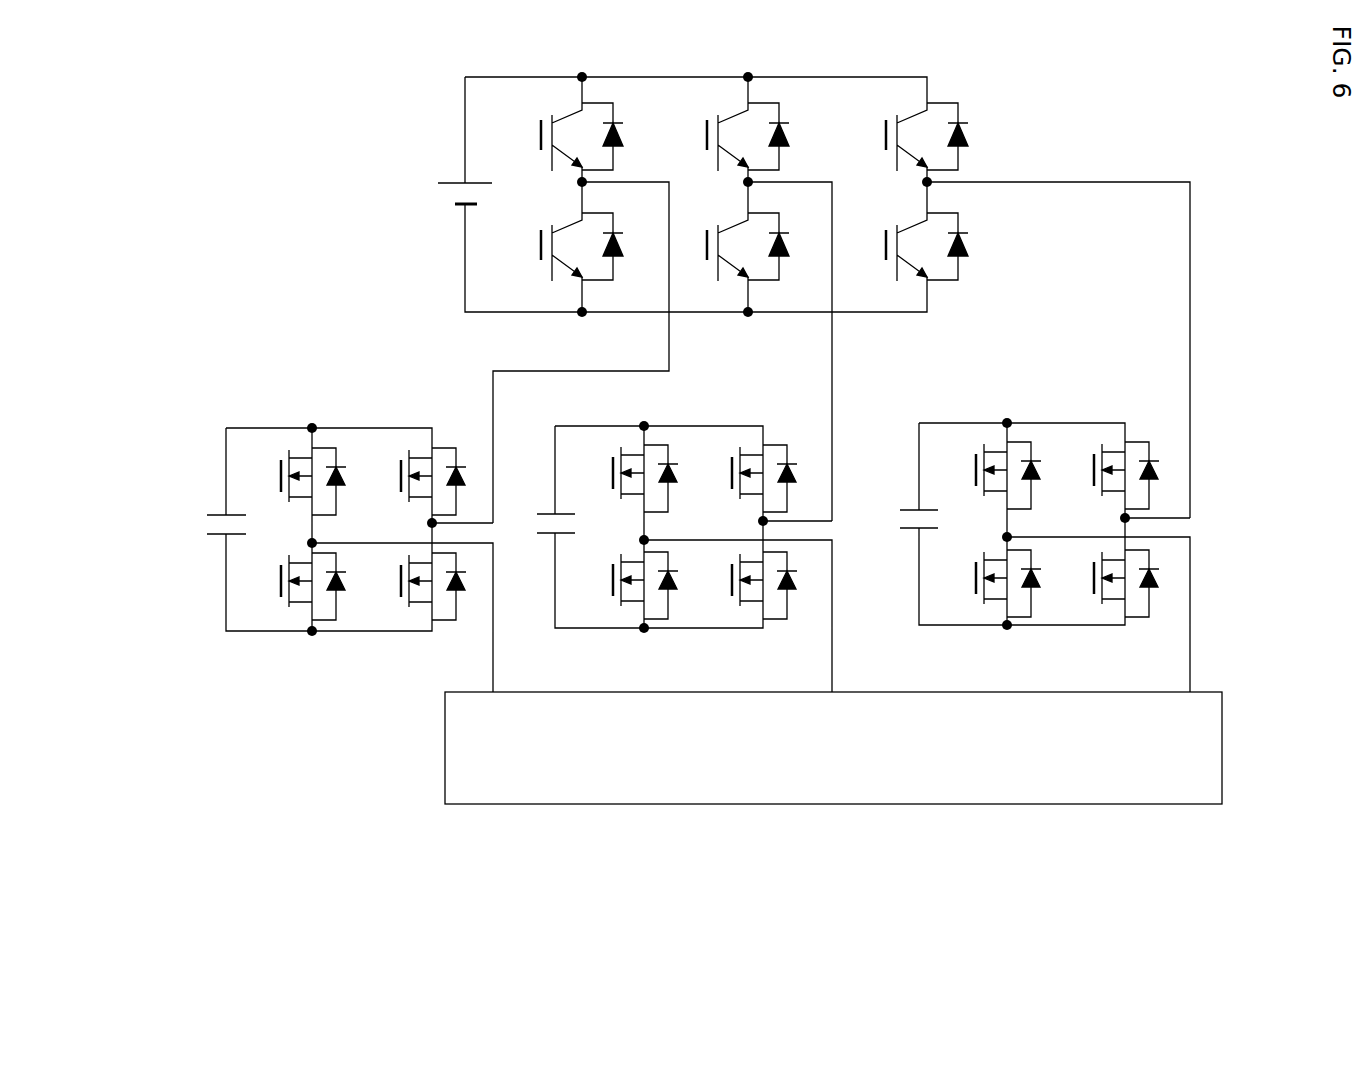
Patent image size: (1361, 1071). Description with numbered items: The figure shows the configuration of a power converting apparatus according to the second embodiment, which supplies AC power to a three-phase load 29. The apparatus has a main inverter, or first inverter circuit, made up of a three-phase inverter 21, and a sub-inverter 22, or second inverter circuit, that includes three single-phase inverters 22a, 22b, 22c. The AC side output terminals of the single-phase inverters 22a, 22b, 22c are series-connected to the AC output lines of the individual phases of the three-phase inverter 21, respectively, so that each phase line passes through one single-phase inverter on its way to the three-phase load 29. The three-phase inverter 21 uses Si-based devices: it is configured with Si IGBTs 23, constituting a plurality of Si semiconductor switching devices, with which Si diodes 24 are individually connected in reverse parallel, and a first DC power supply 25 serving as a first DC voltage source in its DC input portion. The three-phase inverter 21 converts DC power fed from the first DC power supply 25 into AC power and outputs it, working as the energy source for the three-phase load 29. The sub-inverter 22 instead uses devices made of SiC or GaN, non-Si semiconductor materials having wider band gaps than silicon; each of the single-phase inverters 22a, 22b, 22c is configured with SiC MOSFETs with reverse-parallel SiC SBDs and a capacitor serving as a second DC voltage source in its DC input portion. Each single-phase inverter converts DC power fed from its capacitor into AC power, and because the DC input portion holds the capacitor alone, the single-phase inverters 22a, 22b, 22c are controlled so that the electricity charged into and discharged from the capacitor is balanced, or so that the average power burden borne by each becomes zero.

The three-phase inverter 21 is at (697, 205).
The sub-inverter 22 is at (688, 551).
The single-phase inverter 22a is at (339, 530).
The single-phase inverter 22b is at (607, 528).
The single-phase inverter 22c is at (806, 527).
The Si IGBT 23 is at (732, 282).
The Si diode 24 is at (790, 260).
The first DC power supply 25 is at (453, 202).
The three-phase load 29 is at (1222, 750).